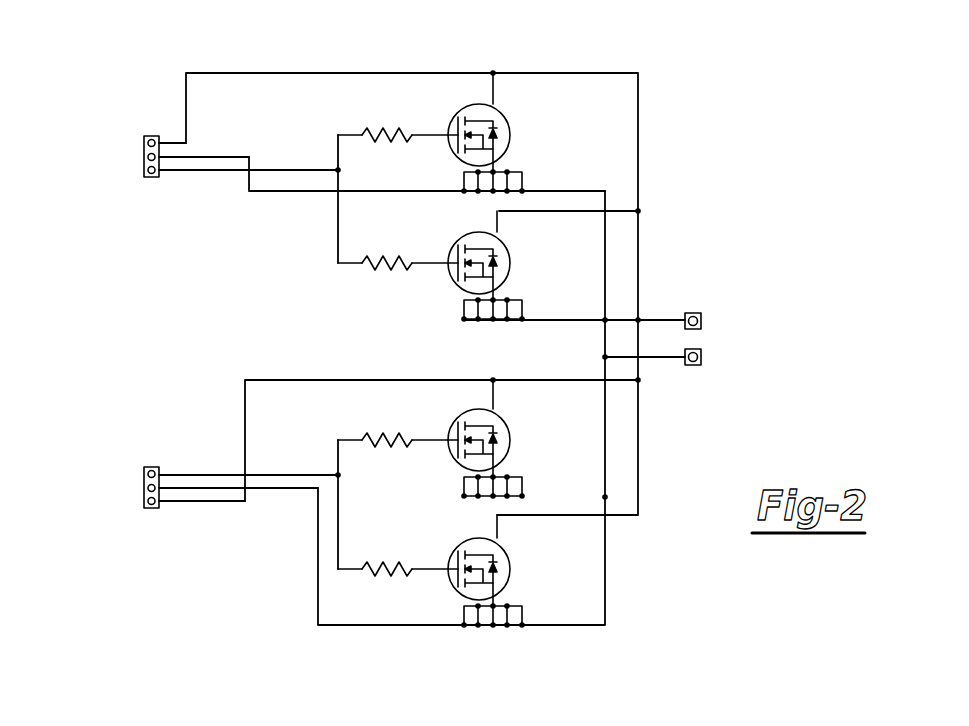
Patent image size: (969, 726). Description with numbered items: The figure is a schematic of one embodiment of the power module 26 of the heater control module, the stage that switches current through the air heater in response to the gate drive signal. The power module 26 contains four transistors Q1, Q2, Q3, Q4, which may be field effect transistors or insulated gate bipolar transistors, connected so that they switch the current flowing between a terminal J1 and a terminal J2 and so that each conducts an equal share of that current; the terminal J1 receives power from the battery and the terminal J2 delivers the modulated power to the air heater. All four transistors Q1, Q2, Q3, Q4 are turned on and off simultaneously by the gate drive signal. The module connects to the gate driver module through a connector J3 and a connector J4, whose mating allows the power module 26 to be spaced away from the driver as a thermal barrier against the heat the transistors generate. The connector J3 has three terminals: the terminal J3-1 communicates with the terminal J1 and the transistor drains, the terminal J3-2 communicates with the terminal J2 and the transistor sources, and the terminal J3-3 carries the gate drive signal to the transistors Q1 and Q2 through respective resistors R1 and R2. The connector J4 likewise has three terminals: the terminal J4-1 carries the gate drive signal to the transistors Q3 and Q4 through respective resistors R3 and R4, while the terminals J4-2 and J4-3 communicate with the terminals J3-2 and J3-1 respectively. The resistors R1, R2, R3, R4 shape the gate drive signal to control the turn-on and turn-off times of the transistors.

The power module 26 is at (427, 332).
The connector J3 is at (152, 141).
The terminal J3-1 is at (146, 143).
The terminal J3-2 is at (146, 157).
The terminal J3-3 is at (146, 170).
The connector J4 is at (152, 473).
The terminal J4-1 is at (146, 475).
The terminal J4-2 is at (146, 488).
The terminal J4-3 is at (146, 501).
The terminal J1 is at (692, 306).
The terminal J2 is at (693, 374).
The resistor R1 is at (398, 117).
The resistor R2 is at (398, 247).
The resistor R3 is at (398, 423).
The resistor R4 is at (398, 552).
The transistor Q1 is at (476, 133).
The transistor Q2 is at (476, 266).
The transistor Q3 is at (476, 439).
The transistor Q4 is at (475, 571).